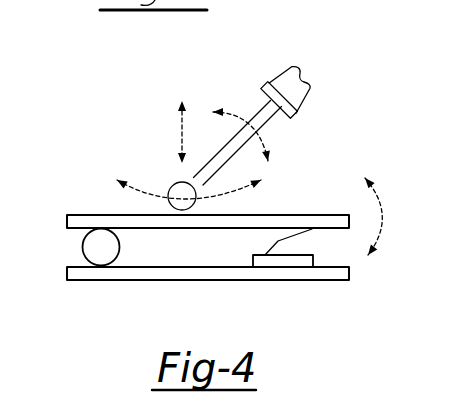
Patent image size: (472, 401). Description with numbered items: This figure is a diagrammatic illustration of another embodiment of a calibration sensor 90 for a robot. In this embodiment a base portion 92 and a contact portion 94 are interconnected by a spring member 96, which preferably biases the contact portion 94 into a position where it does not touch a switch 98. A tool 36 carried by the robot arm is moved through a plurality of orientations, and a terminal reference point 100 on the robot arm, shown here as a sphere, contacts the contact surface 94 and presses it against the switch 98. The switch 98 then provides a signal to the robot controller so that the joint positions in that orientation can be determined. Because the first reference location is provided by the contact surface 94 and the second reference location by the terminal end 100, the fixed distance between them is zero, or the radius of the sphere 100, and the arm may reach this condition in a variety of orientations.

The tool 36 is at (306, 57).
The calibration sensor 90 is at (86, 176).
The base portion 92 is at (227, 280).
The contact portion 94 is at (293, 217).
The spring member 96 is at (83, 247).
The switch 98 is at (296, 233).
The terminal reference point 100 is at (171, 187).